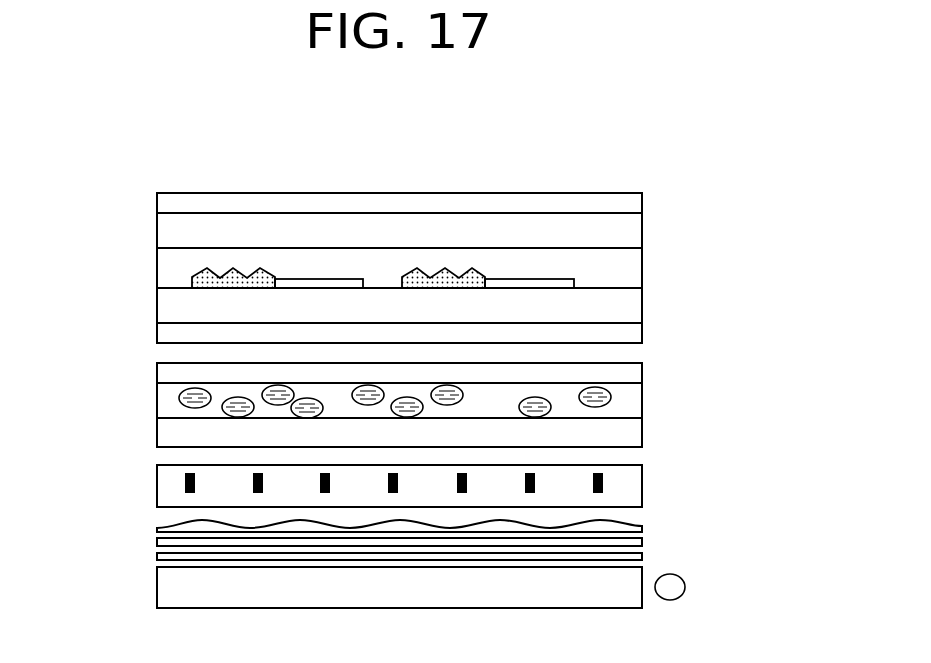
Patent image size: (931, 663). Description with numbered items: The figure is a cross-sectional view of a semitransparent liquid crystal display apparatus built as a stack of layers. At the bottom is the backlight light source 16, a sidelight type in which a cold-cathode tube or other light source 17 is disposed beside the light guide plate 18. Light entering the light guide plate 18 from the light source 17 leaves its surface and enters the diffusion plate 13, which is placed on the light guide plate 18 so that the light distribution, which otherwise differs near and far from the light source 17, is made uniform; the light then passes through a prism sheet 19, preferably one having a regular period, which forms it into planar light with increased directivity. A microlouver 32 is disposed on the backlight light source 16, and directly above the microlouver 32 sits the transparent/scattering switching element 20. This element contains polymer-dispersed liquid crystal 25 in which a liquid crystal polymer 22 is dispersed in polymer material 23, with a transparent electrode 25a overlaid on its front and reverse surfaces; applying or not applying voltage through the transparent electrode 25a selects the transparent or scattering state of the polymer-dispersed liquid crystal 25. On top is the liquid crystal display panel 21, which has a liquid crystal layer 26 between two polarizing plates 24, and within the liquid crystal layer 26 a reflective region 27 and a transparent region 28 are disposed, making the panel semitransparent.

The diffusion plate 13 is at (628, 558).
The backlight light source 16 is at (110, 522).
The light source 17 is at (672, 587).
The light guide plate 18 is at (628, 595).
The prism sheet 19 is at (628, 521).
The transparent/scattering switching element 20 is at (110, 363).
The liquid crystal display panel 21 is at (110, 193).
The liquid crystal polymer 22 is at (612, 395).
The polymer material 23 is at (622, 435).
The polarizing plate 24 is at (622, 208).
The polymer-dispersed liquid crystal 25 is at (652, 402).
The transparent electrode 25a is at (622, 373).
The liquid crystal layer 26 is at (622, 270).
The reflective region 27 is at (232, 288).
The transparent region 28 is at (320, 286).
The microlouver 32 is at (157, 480).